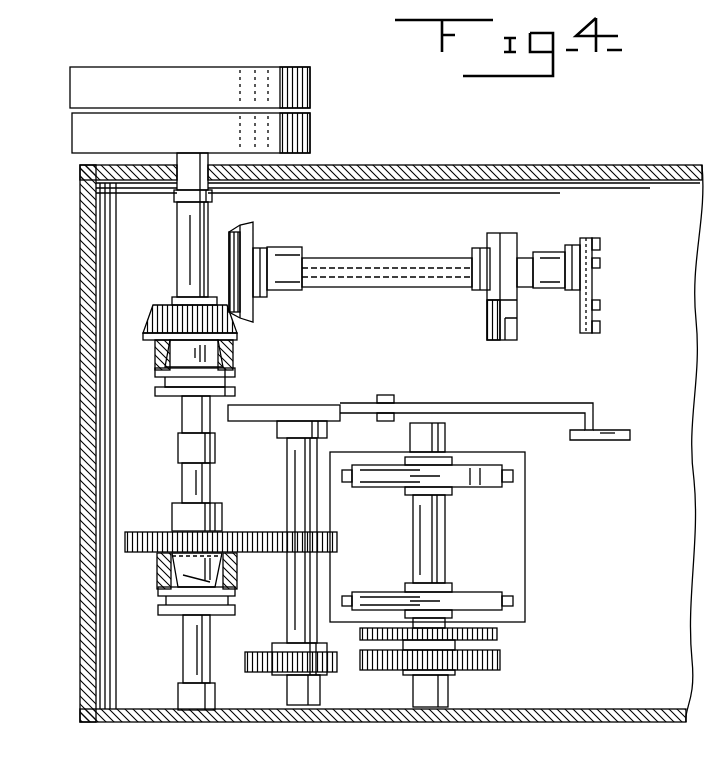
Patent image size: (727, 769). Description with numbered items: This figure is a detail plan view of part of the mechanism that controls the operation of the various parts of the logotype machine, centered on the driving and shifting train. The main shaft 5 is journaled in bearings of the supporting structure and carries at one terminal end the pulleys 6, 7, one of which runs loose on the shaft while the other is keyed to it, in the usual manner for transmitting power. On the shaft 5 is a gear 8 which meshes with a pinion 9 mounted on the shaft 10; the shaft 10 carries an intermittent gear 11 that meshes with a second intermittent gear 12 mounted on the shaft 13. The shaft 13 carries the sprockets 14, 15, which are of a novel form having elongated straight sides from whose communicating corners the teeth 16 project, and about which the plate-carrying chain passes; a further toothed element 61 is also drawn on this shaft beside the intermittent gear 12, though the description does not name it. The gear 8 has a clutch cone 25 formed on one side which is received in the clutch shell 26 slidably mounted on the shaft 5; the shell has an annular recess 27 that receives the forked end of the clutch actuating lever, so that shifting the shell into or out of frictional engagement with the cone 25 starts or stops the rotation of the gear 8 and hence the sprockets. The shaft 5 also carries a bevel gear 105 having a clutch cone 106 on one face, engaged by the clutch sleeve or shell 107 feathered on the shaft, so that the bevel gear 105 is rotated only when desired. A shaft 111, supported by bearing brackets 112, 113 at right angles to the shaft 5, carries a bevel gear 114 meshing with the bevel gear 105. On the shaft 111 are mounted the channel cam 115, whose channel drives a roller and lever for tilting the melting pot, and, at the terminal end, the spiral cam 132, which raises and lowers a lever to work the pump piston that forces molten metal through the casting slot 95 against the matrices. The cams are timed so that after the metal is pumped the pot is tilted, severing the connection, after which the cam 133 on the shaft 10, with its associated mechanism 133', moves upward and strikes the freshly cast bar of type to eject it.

The shaft 5 is at (192, 657).
The pulley 6 is at (300, 88).
The pulley 7 is at (302, 128).
The gear 8 is at (130, 545).
The pinion 9 is at (290, 615).
The shaft 10 is at (297, 624).
The intermittent gear 11 is at (262, 672).
The second intermittent gear 12 is at (487, 667).
The shaft 13 is at (440, 537).
The sprocket 14 is at (473, 607).
The sprocket 15 is at (470, 473).
The teeth 16 is at (507, 477).
The clutch cone 25 is at (230, 500).
The clutch shell 26 is at (158, 590).
The annular recess 27 is at (262, 578).
The ratchet gear 61 is at (487, 633).
The casting slot 95 is at (605, 430).
The bevel gear 105 is at (140, 322).
The clutch cone 106 is at (207, 352).
The clutch sleeve or shell 107 is at (235, 375).
The shaft 111 is at (412, 273).
The bearing bracket 112 is at (283, 268).
The bearing bracket 113 is at (543, 262).
The bevel gear 114 is at (252, 243).
The channel cam 115 is at (487, 323).
The spiral cam 132 is at (600, 287).
The cam 133 is at (283, 436).
The mechanism 133' is at (466, 405).